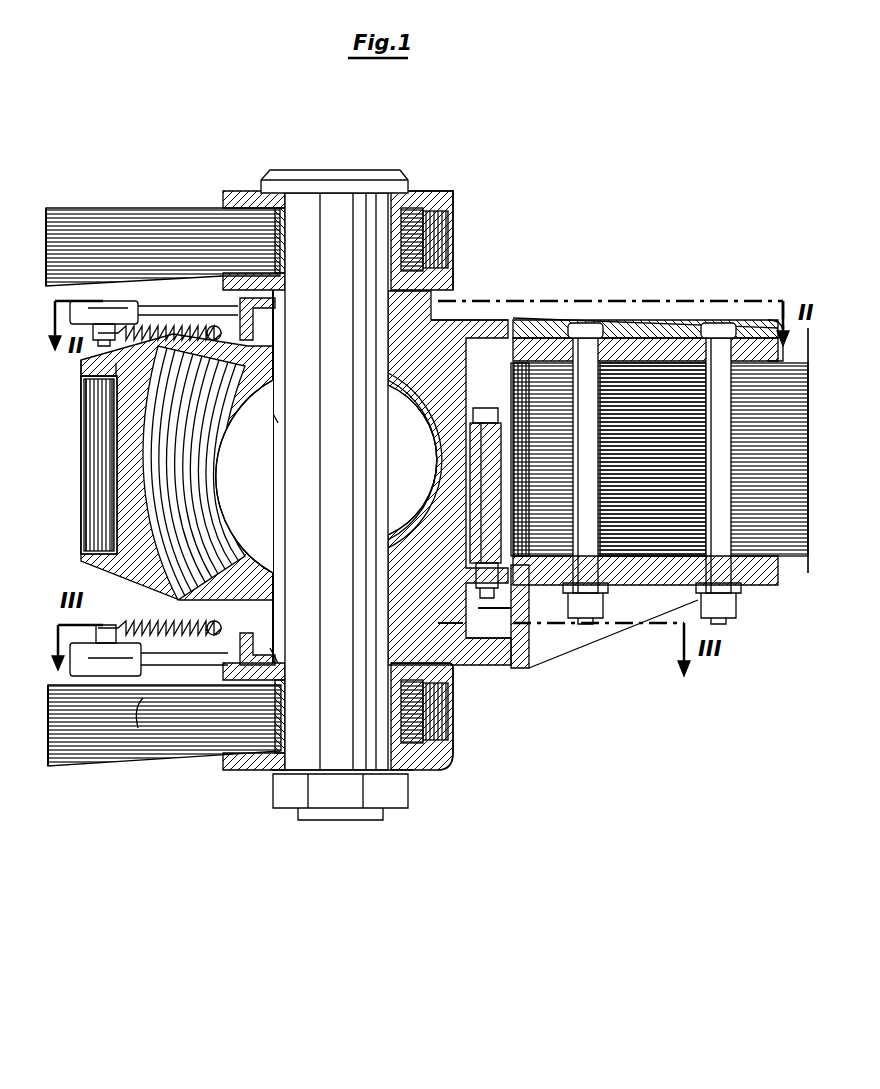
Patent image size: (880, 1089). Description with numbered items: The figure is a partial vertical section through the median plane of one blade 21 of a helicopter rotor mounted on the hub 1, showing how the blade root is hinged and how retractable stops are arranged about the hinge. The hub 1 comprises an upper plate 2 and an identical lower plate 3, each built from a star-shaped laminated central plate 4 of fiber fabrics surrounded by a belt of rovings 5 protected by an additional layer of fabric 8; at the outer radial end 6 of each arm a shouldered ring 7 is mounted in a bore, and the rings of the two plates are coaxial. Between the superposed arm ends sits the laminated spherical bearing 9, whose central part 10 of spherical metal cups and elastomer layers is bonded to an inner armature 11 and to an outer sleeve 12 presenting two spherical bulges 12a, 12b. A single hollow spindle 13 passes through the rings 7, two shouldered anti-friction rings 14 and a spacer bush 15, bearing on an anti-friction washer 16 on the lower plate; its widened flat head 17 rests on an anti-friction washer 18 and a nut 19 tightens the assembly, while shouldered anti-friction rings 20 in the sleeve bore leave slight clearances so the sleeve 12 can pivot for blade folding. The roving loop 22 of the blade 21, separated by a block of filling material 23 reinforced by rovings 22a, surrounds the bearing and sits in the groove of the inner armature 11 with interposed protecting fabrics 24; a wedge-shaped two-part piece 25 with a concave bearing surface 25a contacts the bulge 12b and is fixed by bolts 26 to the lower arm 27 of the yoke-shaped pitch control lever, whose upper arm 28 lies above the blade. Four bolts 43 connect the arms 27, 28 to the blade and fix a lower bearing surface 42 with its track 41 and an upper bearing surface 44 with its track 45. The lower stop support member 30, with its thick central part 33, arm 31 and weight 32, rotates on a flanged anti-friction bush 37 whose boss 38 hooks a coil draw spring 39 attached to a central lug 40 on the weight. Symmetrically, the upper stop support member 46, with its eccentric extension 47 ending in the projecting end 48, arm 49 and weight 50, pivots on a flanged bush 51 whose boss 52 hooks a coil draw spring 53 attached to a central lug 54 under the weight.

The hub 1 is at (116, 195).
The upper plate 2 is at (46, 200).
The lower plate 3 is at (93, 770).
The laminated central plate 4 is at (90, 215).
The belt of rovings 5 is at (430, 185).
The outer radial end 6 is at (400, 220).
The shouldered ring 7 is at (240, 270).
The additional layer of fabric 8 is at (430, 222).
The laminated spherical bearing 9 is at (90, 585).
The central part 10 is at (178, 478).
The inner armature 11 is at (80, 385).
The sleeve 12 is at (420, 345).
The bulge 12a is at (215, 438).
The bulge 12b is at (445, 408).
The spindle 13 is at (335, 215).
The shouldered anti-friction rings 14 is at (270, 300).
The bush 15 is at (262, 487).
The anti-friction washer 16 is at (452, 660).
The widened flat head 17 is at (300, 182).
The anti-friction washer 18 is at (253, 180).
The nut 19 is at (280, 785).
The shouldered anti-friction rings 20 is at (270, 355).
The blade 21 is at (772, 558).
The roving loop 22 is at (90, 490).
The rovings 22a is at (540, 420).
The block of filling material 23 is at (675, 385).
The protecting fabrics 24 is at (80, 448).
The two-part piece 25 is at (432, 530).
The concave spherical bearing surface 25a is at (443, 475).
The bolts 26 is at (462, 420).
The lower arm 27 is at (638, 550).
The upper arm 28 is at (770, 318).
The support member 30 is at (500, 665).
The arm 31 is at (128, 735).
The weight 32 is at (72, 740).
The thick central part 33 is at (455, 625).
The flanged anti-friction bush 37 is at (280, 665).
The boss 38 is at (236, 625).
The coil draw spring 39 is at (185, 618).
The central lug 40 is at (100, 635).
The track 41 is at (488, 588).
The lower bearing surface 42 is at (540, 598).
The bolts 43 is at (578, 480).
The upper bearing surface 44 is at (565, 325).
The track 45 is at (512, 325).
The support member 46 is at (448, 300).
The eccentric extension 47 is at (505, 335).
The projecting end 48 is at (520, 320).
The arm 49 is at (150, 320).
The weight 50 is at (80, 295).
The flanged anti-friction bush 51 is at (262, 312).
The boss 52 is at (270, 412).
The coil draw spring 53 is at (195, 325).
The central lug 54 is at (84, 366).